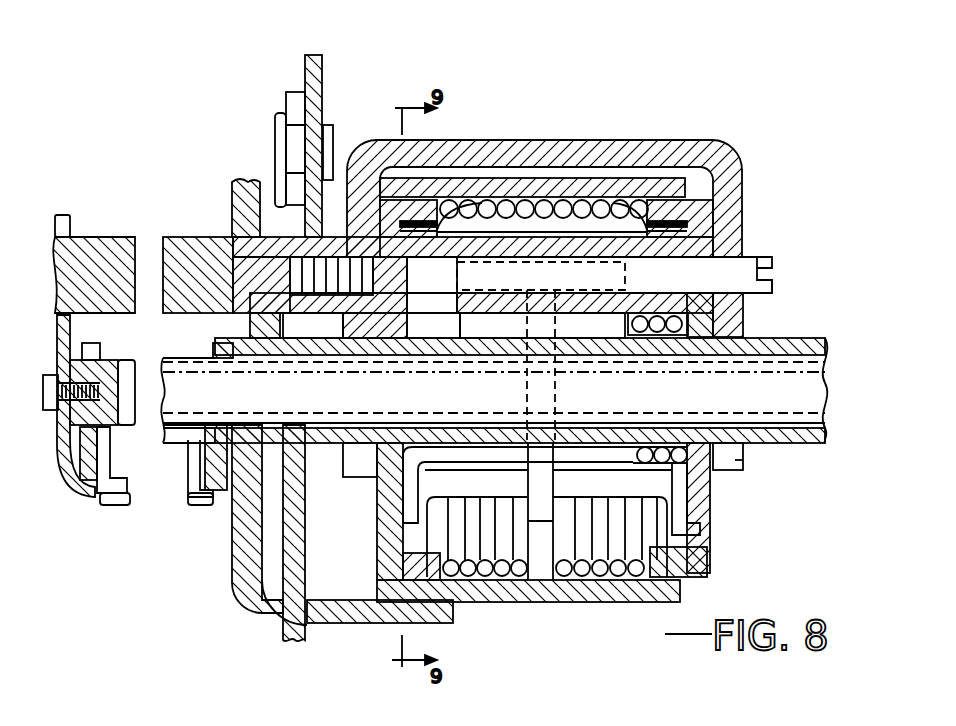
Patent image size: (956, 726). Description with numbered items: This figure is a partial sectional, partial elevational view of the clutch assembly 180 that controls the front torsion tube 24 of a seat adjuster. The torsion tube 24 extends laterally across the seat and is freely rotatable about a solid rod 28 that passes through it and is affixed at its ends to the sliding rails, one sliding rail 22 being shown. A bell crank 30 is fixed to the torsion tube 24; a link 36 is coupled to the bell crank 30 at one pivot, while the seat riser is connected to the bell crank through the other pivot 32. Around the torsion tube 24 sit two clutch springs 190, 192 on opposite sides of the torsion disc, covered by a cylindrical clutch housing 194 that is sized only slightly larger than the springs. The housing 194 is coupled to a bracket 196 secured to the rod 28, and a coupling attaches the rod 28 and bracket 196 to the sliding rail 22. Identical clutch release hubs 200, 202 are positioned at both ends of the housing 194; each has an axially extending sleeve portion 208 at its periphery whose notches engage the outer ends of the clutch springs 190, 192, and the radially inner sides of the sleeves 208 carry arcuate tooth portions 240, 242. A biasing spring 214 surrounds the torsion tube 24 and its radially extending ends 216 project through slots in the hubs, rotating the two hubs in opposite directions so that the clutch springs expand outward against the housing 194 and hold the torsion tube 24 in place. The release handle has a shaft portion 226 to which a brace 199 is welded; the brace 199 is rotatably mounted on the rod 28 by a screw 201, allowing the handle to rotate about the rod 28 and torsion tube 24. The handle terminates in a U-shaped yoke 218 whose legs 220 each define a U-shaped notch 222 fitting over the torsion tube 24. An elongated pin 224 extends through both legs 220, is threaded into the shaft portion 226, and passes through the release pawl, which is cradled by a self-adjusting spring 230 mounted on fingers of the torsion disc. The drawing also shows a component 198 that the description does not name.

The sliding rail 22 is at (95, 498).
The front torsion tube 24 is at (785, 338).
The solid rod 28 is at (100, 462).
The bell crank 30 is at (268, 590).
The pivot 32 is at (272, 140).
The link 36 is at (323, 68).
The clutch assembly 180 is at (575, 113).
The clutch spring 190 is at (602, 560).
The clutch spring 192 is at (470, 560).
The cylindrical clutch housing 194 is at (535, 602).
The bracket 196 is at (230, 593).
The channel bracket 198 is at (222, 498).
The brace 199 is at (75, 327).
The clutch release hub 200 is at (712, 503).
The screw 201 is at (50, 483).
The clutch release hub 202 is at (377, 567).
The sleeve portion 208 is at (423, 582).
The biasing spring 214 is at (747, 313).
The radially extending ends 216 is at (425, 484).
The U-shaped yoke 218 is at (687, 140).
The legs 220 is at (338, 217).
The U-shaped notch 222 is at (352, 450).
The elongated pin 224 is at (760, 258).
The shaft portion 226 is at (195, 237).
The self-adjusting spring 230 is at (590, 360).
The arcuate tooth portion 240 is at (622, 218).
The arcuate tooth portion 242 is at (485, 212).